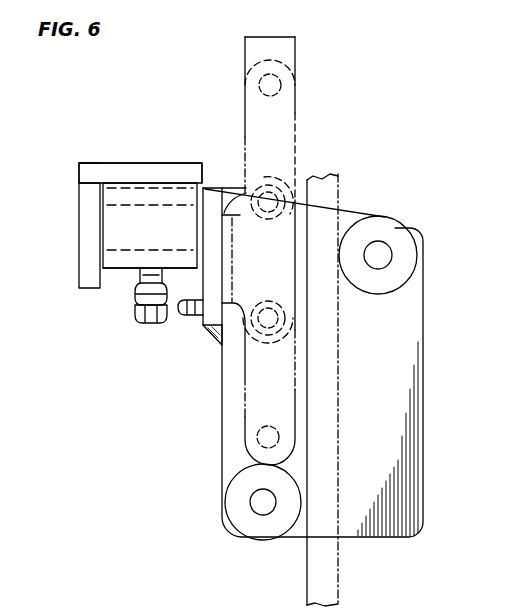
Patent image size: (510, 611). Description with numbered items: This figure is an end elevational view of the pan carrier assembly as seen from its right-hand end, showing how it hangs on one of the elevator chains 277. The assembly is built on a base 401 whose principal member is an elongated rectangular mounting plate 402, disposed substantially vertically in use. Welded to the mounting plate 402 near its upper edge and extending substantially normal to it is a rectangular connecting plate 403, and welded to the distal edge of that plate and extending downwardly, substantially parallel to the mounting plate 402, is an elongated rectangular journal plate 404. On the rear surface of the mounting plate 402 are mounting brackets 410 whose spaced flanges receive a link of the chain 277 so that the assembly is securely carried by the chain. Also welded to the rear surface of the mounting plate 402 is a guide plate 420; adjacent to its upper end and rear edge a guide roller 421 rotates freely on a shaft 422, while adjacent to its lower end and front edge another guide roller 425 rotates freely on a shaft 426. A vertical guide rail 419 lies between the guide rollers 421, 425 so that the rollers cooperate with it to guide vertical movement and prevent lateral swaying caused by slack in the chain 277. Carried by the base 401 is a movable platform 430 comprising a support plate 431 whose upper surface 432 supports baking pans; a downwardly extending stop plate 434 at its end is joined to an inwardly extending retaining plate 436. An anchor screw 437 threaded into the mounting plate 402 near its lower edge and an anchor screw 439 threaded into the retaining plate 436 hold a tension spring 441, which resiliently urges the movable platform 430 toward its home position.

The chains 277 is at (296, 98).
The base 401 is at (208, 348).
The mounting plate 402 is at (211, 186).
The connecting plate 403 is at (166, 207).
The journal plate 404 is at (82, 277).
The mounting brackets 410 is at (267, 177).
The guide rails 419 is at (340, 564).
The guide plates 420 is at (425, 478).
The guide roller 421 is at (381, 225).
The shaft 422 is at (385, 254).
The guide roller 425 is at (272, 540).
The shaft 426 is at (256, 498).
The movable platform 430 is at (112, 155).
The support plate 431 is at (158, 172).
The upper surface 432 is at (93, 163).
The stop plate 434 is at (118, 270).
The retaining plate 436 is at (195, 251).
The anchor screw 437 is at (187, 318).
The anchor screw 439 is at (158, 321).
The tension spring 441 is at (137, 299).